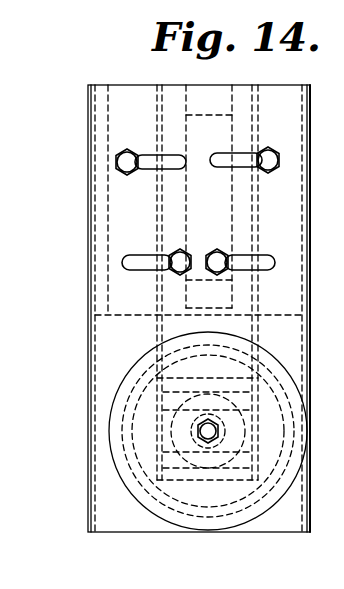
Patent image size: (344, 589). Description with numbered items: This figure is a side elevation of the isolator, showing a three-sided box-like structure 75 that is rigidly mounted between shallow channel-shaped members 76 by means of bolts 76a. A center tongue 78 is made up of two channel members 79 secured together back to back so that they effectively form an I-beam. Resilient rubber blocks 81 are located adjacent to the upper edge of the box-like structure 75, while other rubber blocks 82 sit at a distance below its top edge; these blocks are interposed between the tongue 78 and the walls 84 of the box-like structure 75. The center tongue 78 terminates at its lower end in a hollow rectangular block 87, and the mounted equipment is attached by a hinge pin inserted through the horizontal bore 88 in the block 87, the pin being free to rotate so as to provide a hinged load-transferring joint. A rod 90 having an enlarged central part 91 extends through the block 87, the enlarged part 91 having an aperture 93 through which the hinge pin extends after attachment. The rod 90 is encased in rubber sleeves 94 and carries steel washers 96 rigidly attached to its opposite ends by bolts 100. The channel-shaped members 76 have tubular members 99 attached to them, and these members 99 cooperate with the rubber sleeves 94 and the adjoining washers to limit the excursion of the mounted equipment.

The box-like structure 75 is at (84, 350).
The channel-shaped members 76 is at (128, 92).
The bolts 76a is at (127, 150).
The center tongue 78 is at (259, 215).
The channel members 79 is at (160, 236).
The rubber blocks 81 is at (215, 92).
The rubber blocks 82 is at (222, 296).
The walls 84 is at (103, 122).
The hollow rectangular block 87 is at (185, 378).
The horizontal bore 88 is at (258, 402).
The rod 90 is at (155, 448).
The enlarged central part 91 is at (258, 378).
The aperture 93 is at (160, 462).
The rubber sleeves 94 is at (218, 395).
The steel washers 96 is at (110, 407).
The tubular members 99 is at (232, 470).
The bolts 100 is at (212, 438).